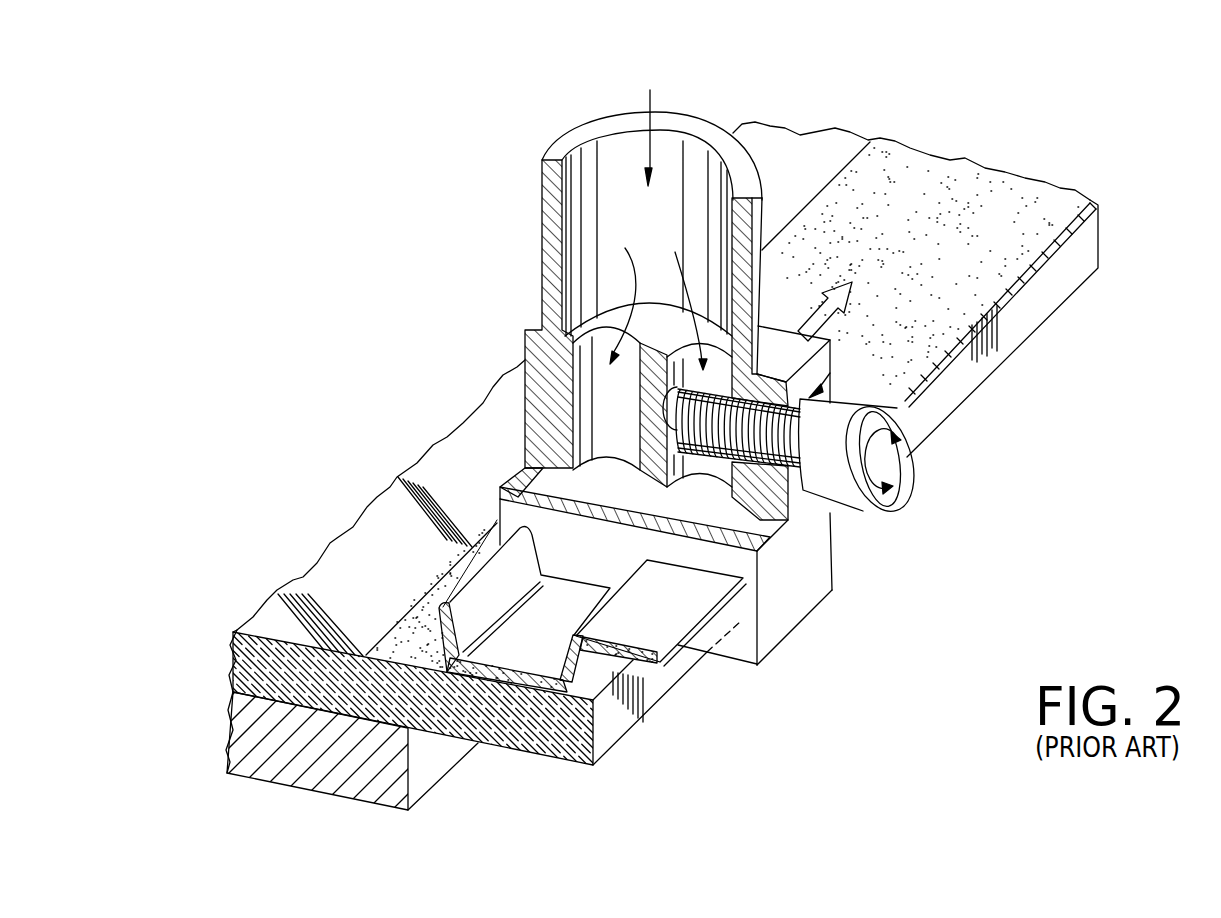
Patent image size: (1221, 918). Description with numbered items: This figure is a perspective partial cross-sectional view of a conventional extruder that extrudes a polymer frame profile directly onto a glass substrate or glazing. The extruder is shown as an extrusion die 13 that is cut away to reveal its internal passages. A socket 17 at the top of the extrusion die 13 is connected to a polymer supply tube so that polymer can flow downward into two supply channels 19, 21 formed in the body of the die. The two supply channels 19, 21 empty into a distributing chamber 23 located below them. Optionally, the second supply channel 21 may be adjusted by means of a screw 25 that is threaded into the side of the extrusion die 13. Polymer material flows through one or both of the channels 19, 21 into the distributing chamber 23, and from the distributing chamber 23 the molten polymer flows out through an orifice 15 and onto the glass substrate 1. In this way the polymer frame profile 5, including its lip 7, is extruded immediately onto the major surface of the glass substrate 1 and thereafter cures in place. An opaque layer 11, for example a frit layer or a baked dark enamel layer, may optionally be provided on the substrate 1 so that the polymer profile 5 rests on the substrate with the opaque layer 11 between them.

The glass substrate 1 is at (548, 748).
The polymer frame profile 5 is at (478, 745).
The lip 7 is at (660, 630).
The opaque layer 11 is at (403, 640).
The extrusion die 13 is at (810, 628).
The orifice 15 is at (574, 584).
The socket 17 is at (630, 158).
The supply channel 19 is at (598, 336).
The supply channel 21 is at (690, 348).
The distributing chamber 23 is at (517, 481).
The screw 25 is at (838, 342).